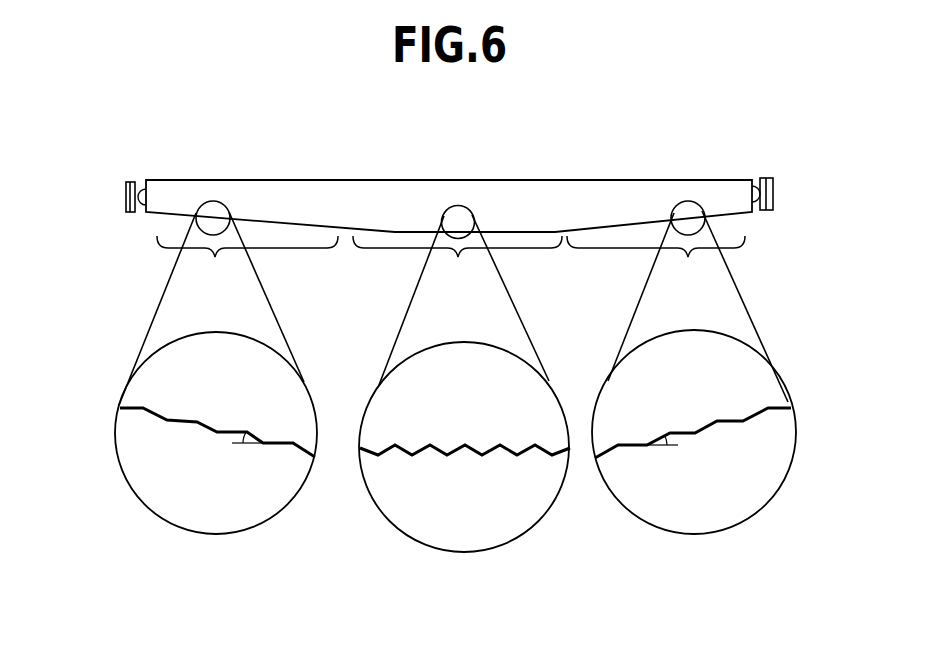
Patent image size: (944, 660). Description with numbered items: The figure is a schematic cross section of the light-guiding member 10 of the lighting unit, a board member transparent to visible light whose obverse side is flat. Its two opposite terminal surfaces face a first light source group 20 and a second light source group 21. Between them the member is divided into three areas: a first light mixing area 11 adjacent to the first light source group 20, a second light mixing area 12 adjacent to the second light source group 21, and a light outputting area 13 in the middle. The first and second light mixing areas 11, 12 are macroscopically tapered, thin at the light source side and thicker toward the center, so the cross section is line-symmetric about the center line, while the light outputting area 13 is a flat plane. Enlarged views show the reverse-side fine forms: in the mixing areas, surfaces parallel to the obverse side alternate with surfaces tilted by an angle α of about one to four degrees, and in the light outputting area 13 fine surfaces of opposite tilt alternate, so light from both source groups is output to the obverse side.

The light-guiding member 10 is at (339, 186).
The first light mixing area 11 is at (226, 367).
The second light mixing area 12 is at (681, 367).
The light outputting area 13 is at (461, 379).
The first light source group 20 is at (123, 176).
The second light source group 21 is at (774, 176).